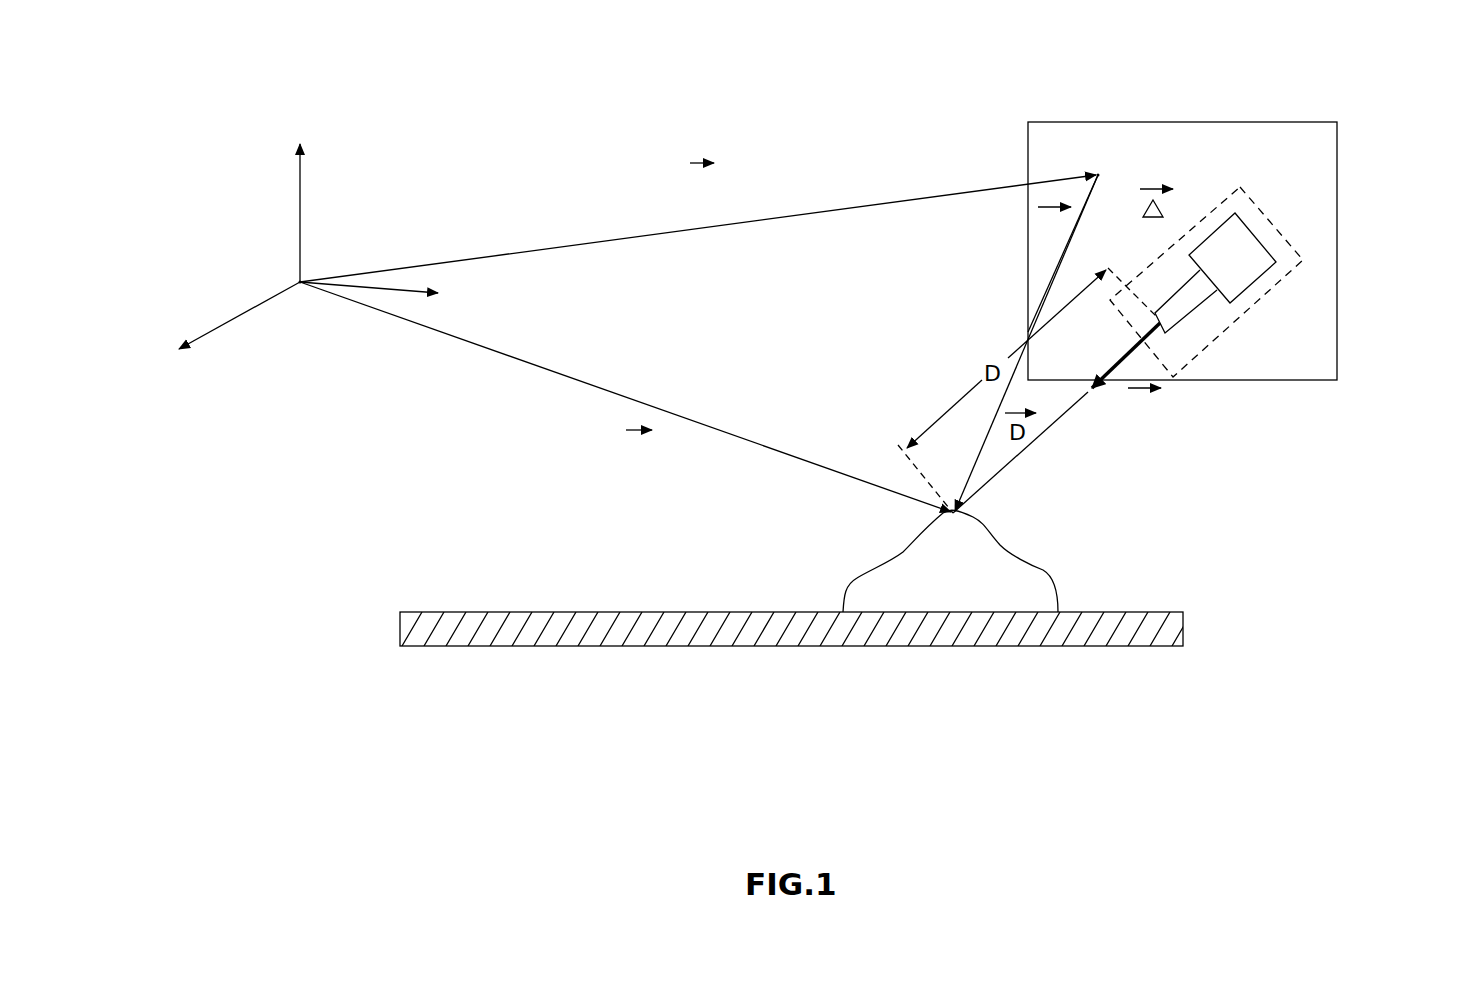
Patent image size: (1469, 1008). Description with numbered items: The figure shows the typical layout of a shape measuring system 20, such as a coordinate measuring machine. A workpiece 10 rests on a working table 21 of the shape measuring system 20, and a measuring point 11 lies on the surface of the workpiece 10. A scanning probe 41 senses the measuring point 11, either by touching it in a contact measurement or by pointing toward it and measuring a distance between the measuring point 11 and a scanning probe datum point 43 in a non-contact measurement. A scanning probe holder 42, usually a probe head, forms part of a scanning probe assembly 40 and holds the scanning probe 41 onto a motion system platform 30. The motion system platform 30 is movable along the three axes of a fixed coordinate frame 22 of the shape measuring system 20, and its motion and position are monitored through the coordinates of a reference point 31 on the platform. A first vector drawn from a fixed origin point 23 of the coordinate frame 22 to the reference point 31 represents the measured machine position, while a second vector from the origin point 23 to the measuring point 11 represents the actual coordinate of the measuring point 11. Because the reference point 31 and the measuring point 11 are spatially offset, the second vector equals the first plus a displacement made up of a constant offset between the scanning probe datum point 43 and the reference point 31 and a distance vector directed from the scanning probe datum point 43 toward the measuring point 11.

The workpiece 10 is at (898, 580).
The measuring point 11 is at (958, 515).
The shape measuring system 20 is at (286, 517).
The working table 21 is at (607, 647).
The fixed coordinate frame 22 is at (263, 265).
The origin point 23 is at (297, 279).
The motion system platform 30 is at (1215, 170).
The reference point 31 is at (1100, 174).
The scanning probe assembly 40 is at (1291, 216).
The scanning probe 41 is at (1195, 290).
The scanning probe holder 42 is at (1242, 262).
The scanning probe datum point 43 is at (1157, 330).